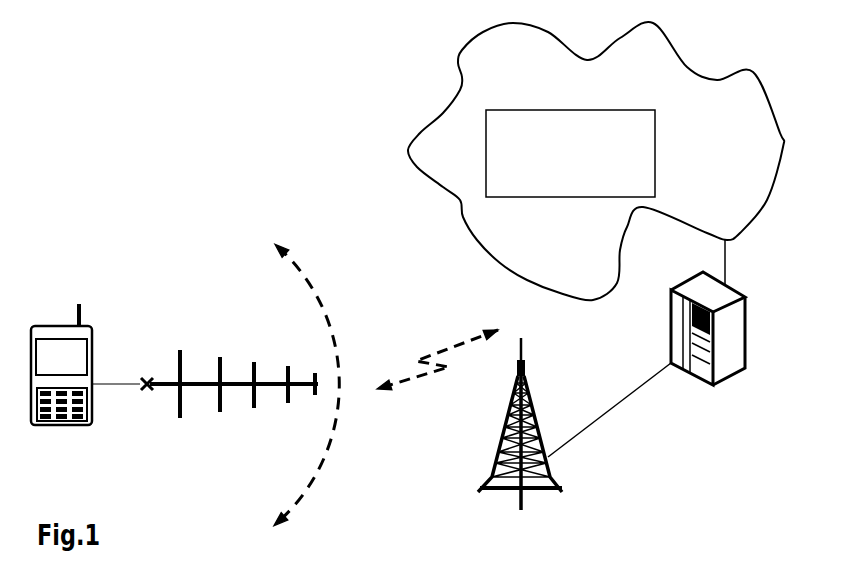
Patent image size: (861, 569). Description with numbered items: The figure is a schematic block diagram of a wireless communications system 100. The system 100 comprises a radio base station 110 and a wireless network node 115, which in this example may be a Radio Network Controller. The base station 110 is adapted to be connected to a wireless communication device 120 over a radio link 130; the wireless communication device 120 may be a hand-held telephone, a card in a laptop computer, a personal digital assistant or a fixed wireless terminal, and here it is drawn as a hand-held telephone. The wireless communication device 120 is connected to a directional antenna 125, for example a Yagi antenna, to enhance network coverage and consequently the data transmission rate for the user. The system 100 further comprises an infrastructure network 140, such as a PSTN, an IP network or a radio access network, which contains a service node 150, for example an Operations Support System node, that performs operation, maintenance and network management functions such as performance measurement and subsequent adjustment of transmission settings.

The wireless communications system 100 is at (679, 428).
The radio base station 110 is at (548, 510).
The wireless network node 115 is at (750, 308).
The wireless communication device 120 is at (58, 431).
The directional antenna 125 is at (239, 420).
The radio link 130 is at (450, 337).
The infrastructure network 140 is at (748, 181).
The service node 150 is at (630, 186).